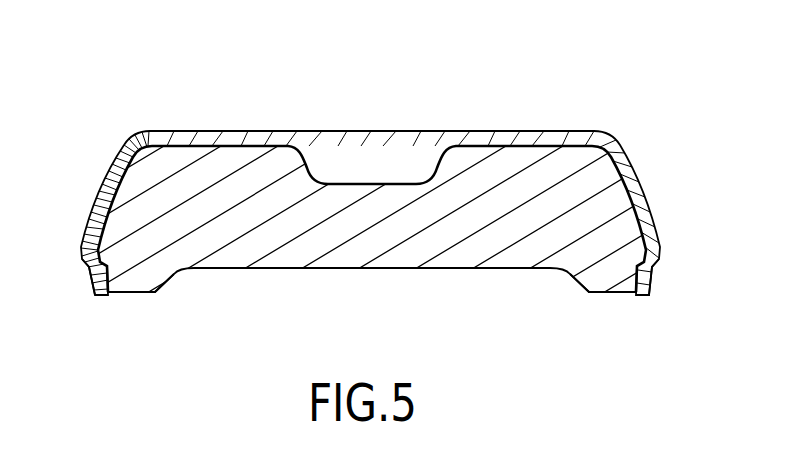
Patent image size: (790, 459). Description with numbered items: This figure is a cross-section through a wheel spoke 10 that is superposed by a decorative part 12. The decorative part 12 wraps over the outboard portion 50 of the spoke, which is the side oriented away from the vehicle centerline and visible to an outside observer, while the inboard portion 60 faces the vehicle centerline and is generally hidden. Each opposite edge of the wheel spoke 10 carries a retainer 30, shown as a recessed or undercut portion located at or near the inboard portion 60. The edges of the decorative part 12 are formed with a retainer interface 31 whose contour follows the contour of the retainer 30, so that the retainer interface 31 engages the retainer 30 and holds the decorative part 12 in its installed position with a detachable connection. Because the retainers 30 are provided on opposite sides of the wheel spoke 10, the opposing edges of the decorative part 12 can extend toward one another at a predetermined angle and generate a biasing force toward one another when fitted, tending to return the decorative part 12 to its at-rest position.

The wheel spoke 10 is at (287, 253).
The decorative part 12 is at (201, 139).
The retainer 30 is at (109, 281).
The retainer interface 31 is at (93, 282).
The outboard portion 50 is at (410, 104).
The inboard portion 60 is at (428, 271).